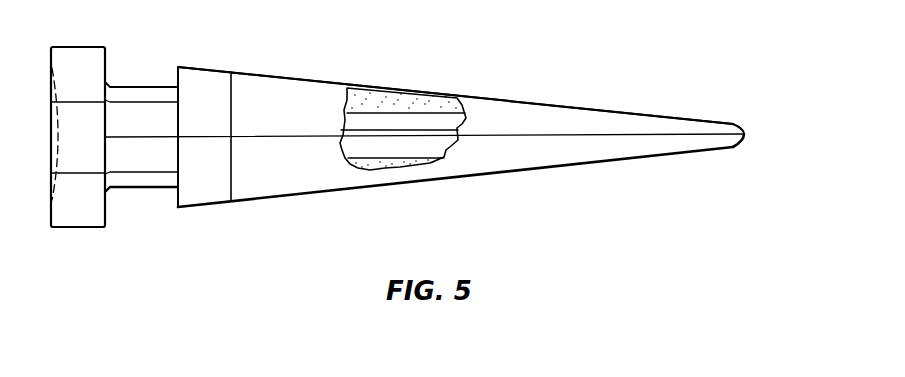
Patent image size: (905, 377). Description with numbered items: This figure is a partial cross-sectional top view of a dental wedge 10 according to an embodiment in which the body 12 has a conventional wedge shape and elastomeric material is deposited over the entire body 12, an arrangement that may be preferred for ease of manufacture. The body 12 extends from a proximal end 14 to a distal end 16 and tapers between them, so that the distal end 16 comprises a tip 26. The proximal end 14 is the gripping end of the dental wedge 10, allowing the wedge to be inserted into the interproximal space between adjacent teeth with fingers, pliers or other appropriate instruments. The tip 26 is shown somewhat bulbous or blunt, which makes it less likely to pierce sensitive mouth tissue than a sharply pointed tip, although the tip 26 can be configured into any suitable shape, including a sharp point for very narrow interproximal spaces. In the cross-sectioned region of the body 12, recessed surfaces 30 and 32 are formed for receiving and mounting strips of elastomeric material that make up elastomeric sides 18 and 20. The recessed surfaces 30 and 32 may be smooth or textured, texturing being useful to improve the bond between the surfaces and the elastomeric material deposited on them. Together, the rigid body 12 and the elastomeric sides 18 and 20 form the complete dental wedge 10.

The dental wedge 10 is at (501, 81).
The body 12 is at (356, 125).
The proximal end 14 is at (74, 239).
The distal end 16 is at (726, 164).
The elastomeric side 18 is at (433, 98).
The elastomeric side 20 is at (430, 165).
The tip 26 is at (718, 125).
The recessed surface 30 is at (372, 104).
The recessed surface 32 is at (365, 162).